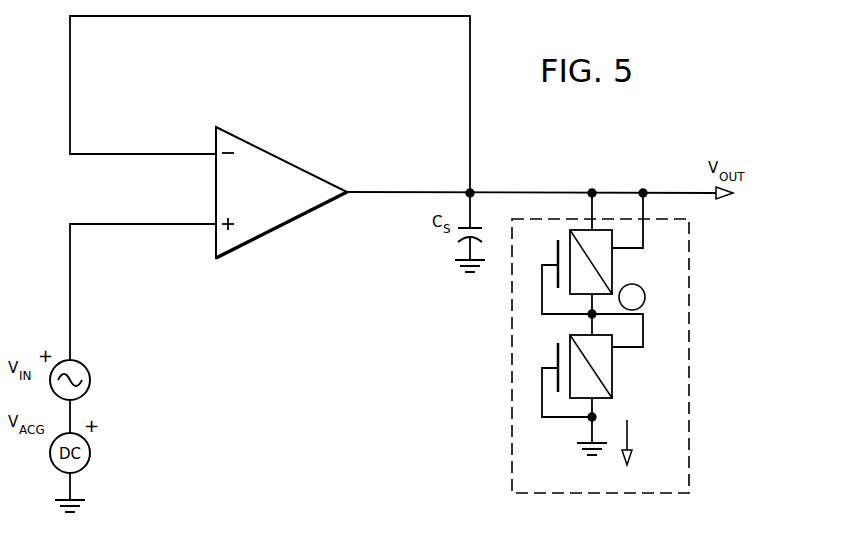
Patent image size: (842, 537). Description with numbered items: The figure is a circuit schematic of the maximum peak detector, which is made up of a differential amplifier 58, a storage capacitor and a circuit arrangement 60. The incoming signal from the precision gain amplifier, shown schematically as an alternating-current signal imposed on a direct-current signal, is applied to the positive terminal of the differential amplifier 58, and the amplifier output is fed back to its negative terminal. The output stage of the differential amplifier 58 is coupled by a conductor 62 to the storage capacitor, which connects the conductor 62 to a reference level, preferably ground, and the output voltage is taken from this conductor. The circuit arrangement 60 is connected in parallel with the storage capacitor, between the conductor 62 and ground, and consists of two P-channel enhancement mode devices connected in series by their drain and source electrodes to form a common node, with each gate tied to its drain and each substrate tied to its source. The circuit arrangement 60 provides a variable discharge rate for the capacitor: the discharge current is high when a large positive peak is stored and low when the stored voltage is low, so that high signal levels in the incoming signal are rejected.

The differential amplifier 58 is at (278, 153).
The conductor 62 is at (400, 192).
The circuit arrangement 60 is at (512, 387).